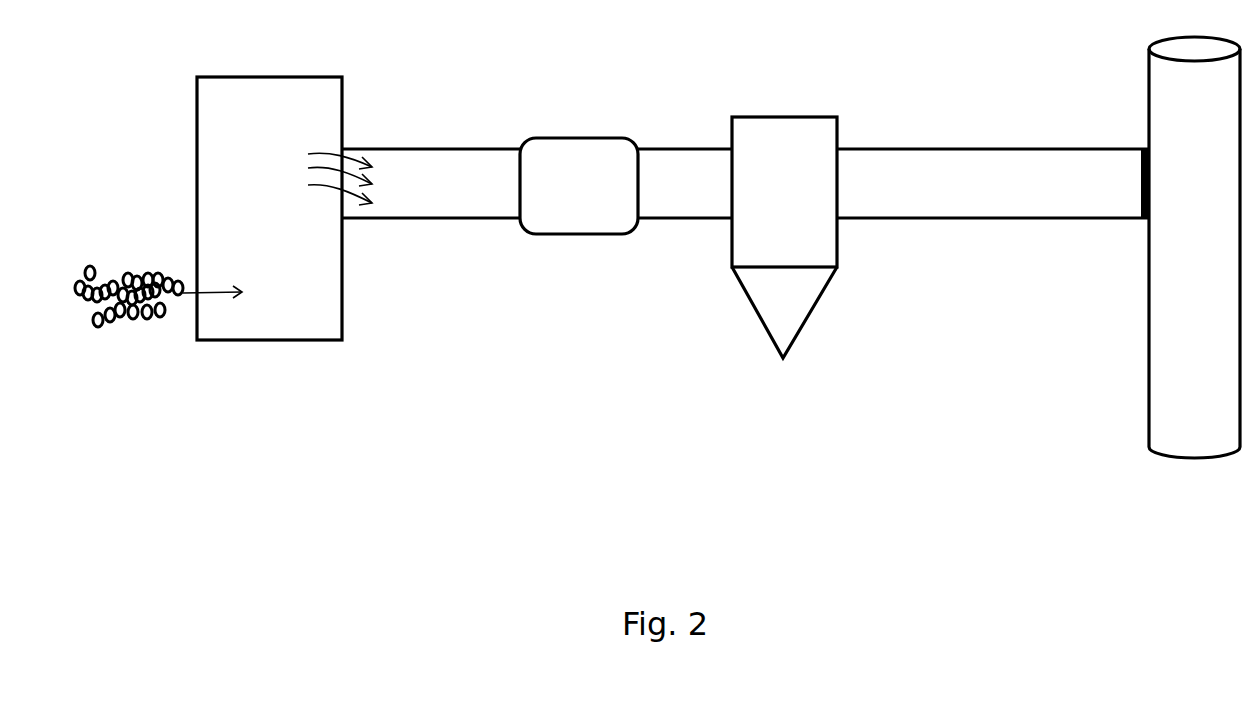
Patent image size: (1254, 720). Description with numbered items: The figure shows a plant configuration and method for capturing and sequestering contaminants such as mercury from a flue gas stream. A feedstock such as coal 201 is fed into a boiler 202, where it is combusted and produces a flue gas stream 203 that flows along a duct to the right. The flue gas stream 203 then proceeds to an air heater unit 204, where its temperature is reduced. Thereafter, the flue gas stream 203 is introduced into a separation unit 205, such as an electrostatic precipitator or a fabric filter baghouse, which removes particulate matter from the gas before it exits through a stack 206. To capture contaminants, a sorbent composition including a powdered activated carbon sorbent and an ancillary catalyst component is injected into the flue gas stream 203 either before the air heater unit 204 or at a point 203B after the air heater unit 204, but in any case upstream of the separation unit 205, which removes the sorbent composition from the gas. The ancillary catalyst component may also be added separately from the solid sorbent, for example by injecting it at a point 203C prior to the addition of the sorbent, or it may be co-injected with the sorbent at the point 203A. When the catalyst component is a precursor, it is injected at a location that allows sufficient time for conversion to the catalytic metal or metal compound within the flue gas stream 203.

The coal 201 is at (126, 276).
The boiler 202 is at (290, 248).
The flue gas stream 203 is at (348, 167).
The injection point after the air heater unit 203A is at (521, 142).
The injection point after the air heater unit 203B is at (660, 142).
The injection point prior to addition of the sorbent 203C is at (427, 142).
The air heater unit 204 is at (597, 198).
The separation unit 205 is at (807, 190).
The stack 206 is at (1212, 184).